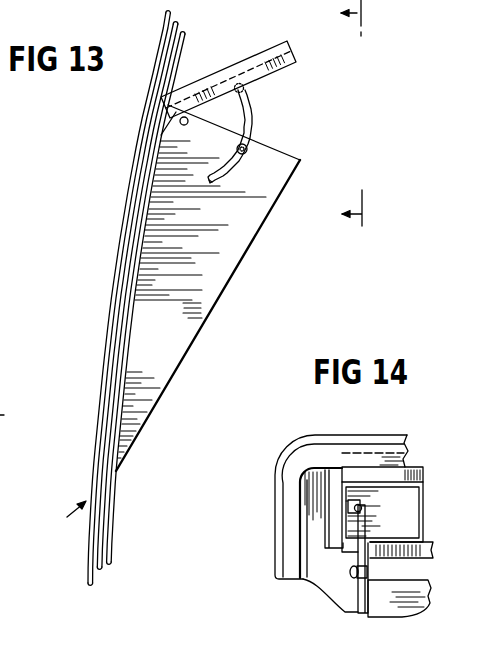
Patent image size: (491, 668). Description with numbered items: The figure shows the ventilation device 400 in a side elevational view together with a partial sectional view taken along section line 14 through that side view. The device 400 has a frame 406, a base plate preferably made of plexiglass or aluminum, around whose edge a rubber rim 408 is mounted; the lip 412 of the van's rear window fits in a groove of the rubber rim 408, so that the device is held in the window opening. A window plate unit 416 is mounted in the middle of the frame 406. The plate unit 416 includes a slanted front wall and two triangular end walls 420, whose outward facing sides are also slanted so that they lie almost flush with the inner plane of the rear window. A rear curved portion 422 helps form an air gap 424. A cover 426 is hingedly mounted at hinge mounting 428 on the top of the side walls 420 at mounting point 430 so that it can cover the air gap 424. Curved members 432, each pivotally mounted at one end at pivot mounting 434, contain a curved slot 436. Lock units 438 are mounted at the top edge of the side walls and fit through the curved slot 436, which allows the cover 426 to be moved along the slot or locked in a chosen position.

In FIG. 13, the section line 14 is at (192, 200).
In FIG. 13, the device 400 is at (115, 297).
In FIG. 14, the device 400 is at (206, 667).
In FIG. 14, the frame 406 is at (323, 578).
In FIG. 13, the rubber rim 408 is at (100, 577).
In FIG. 14, the rubber rim 408 is at (287, 524).
In FIG. 13, the lip 412 is at (14, 418).
In FIG. 13, the window plate unit 416 is at (190, 349).
In FIG. 13, the end walls 420 is at (232, 300).
In FIG. 14, the end walls 420 is at (400, 612).
In FIG. 13, the rear curved portion 422 is at (146, 160).
In FIG. 13, the air gap 424 is at (271, 140).
In FIG. 13, the cover 426 is at (208, 96).
In FIG. 14, the cover 426 is at (358, 475).
In FIG. 14, the hinge mounting 428 is at (328, 468).
In FIG. 14, the mounting point 430 is at (383, 544).
In FIG. 13, the curved members 432 is at (258, 116).
In FIG. 14, the curved members 432 is at (362, 505).
In FIG. 13, the pivot mounting 434 is at (241, 78).
In FIG. 13, the curved slot 436 is at (226, 180).
In FIG. 13, the lock units 438 is at (300, 166).
In FIG. 14, the lock units 438 is at (352, 578).